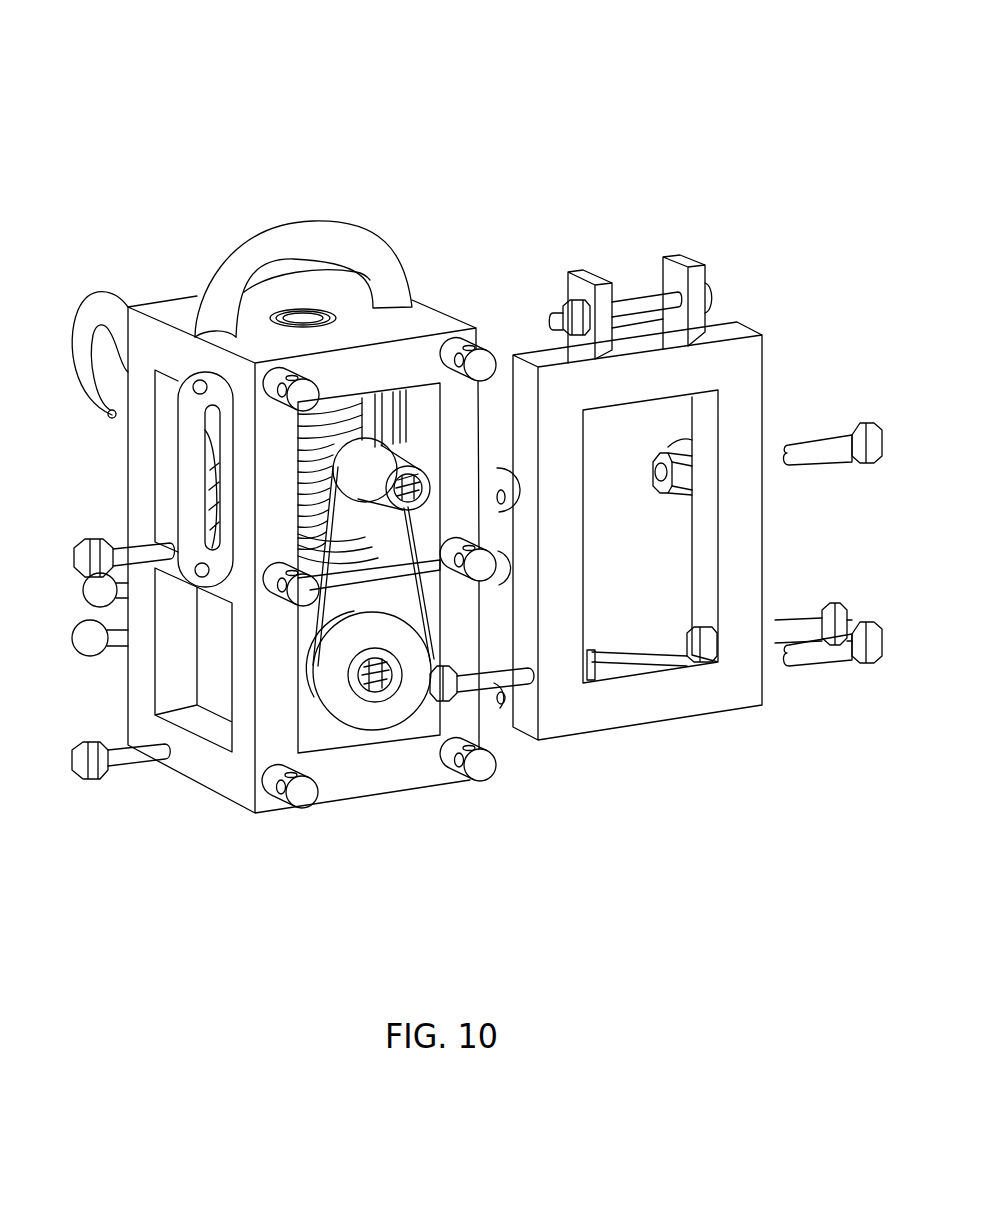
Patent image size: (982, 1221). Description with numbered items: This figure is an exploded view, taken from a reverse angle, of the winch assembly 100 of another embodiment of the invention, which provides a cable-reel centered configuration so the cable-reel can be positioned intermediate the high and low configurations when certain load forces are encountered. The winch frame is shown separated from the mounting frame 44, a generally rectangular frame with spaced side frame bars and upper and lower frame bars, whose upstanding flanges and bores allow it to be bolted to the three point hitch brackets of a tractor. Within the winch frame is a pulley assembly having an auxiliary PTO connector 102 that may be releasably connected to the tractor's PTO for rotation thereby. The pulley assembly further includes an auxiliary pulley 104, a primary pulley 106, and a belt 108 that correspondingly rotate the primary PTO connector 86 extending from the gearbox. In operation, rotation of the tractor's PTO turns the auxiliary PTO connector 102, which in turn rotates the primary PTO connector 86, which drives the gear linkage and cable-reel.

The winch assembly 100 is at (505, 88).
The mounting frame 44 is at (753, 300).
The primary PTO connector 86 is at (390, 693).
The auxiliary PTO connector 102 is at (383, 460).
The auxiliary pulley 104 is at (373, 430).
The primary pulley 106 is at (352, 727).
The belt 108 is at (318, 653).